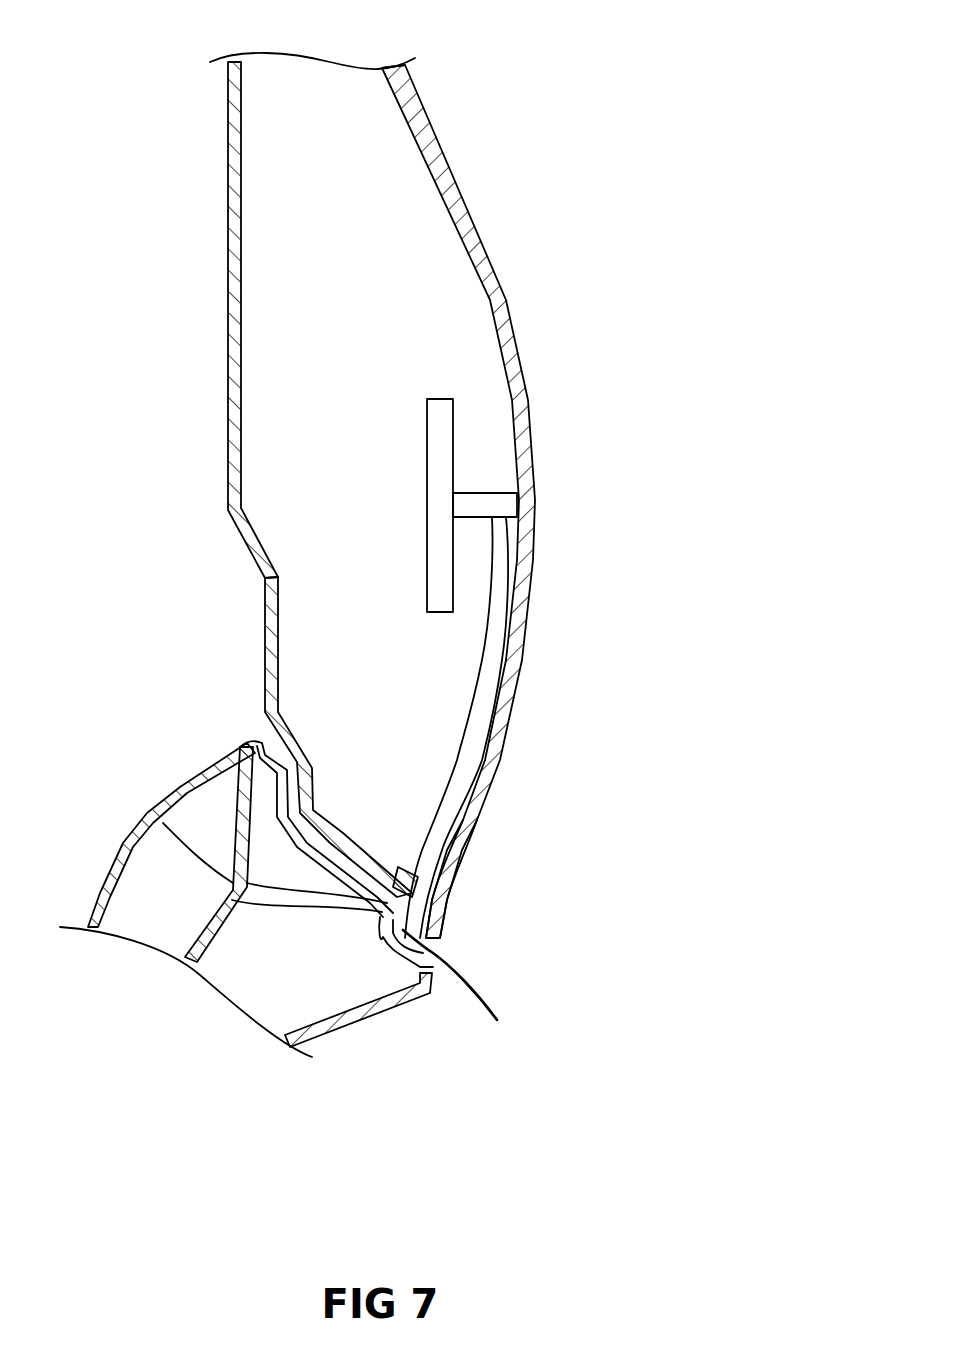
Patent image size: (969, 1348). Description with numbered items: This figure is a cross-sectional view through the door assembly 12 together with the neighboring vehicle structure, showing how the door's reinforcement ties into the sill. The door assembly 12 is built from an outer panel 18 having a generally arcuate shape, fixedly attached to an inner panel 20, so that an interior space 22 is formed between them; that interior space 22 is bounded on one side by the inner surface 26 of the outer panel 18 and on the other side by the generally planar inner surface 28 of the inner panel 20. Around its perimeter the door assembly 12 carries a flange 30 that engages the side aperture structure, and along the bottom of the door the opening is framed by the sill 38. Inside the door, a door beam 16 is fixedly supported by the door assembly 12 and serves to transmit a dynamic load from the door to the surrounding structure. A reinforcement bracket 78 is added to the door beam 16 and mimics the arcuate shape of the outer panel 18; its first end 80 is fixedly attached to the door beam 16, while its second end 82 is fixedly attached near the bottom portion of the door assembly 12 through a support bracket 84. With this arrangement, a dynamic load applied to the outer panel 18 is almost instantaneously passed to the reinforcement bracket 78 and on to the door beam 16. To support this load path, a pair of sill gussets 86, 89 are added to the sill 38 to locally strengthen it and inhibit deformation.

The door assembly 12 is at (467, 87).
The door beam 16 is at (462, 422).
The outer panel 18 is at (510, 732).
The inner panel 20 is at (266, 628).
The interior space 22 is at (395, 200).
The inner surface 26 is at (480, 230).
The planar inner surface 28 is at (238, 212).
The flange 30 is at (466, 994).
The sill 38 is at (343, 1022).
The reinforcement bracket 78 is at (500, 660).
The first end 80 is at (502, 533).
The second end 82 is at (428, 868).
The support bracket 84 is at (422, 892).
The sill gusset 86 is at (277, 897).
The sill gusset 89 is at (182, 828).